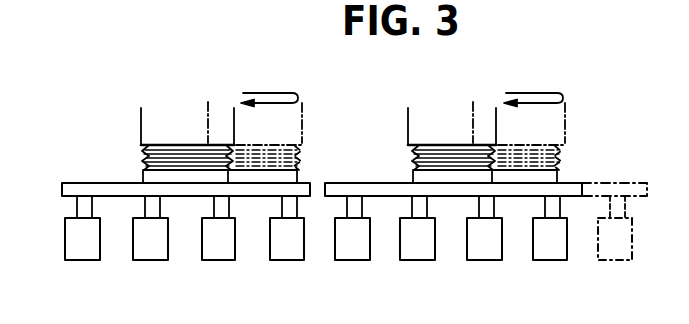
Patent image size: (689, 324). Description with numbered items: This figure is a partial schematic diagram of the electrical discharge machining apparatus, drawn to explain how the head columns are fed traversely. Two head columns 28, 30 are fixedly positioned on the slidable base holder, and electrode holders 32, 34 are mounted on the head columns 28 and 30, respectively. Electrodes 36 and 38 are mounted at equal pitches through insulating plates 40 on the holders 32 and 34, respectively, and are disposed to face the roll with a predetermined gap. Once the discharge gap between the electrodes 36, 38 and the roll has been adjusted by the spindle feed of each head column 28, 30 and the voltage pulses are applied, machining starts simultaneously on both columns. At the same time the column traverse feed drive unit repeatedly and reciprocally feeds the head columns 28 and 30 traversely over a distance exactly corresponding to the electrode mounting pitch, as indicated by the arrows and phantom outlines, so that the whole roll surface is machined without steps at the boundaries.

The head column 28 is at (181, 121).
The head column 30 is at (452, 127).
The electrode holder 32 is at (102, 183).
The electrode holder 34 is at (371, 183).
The electrodes 36 is at (97, 248).
The electrodes 38 is at (363, 250).
The insulating plates 40 is at (99, 206).